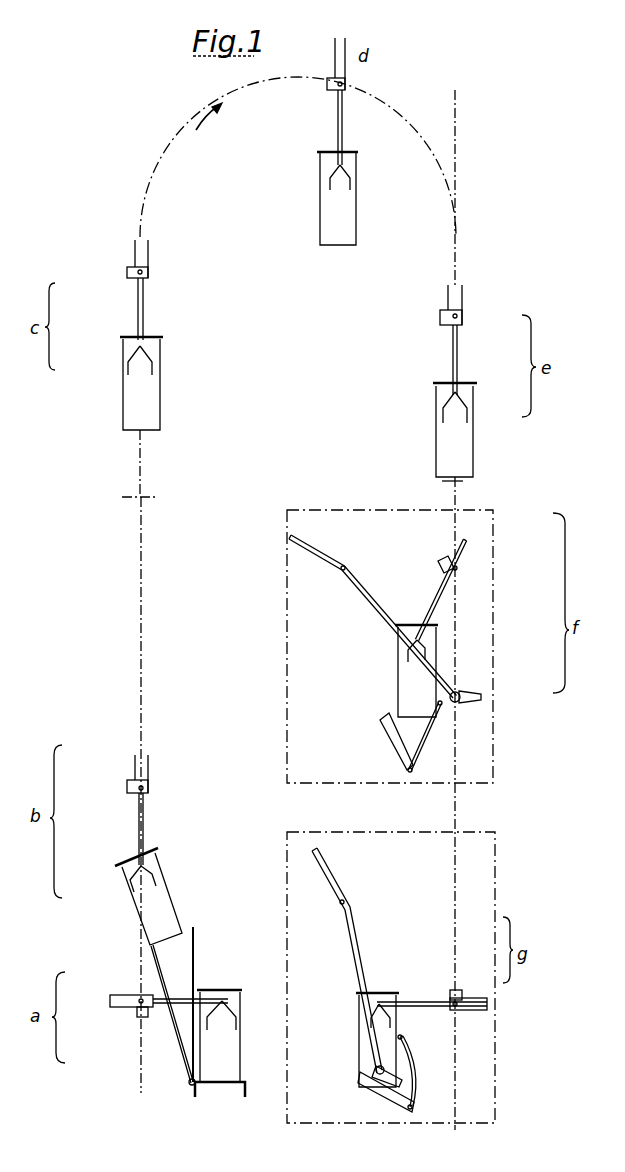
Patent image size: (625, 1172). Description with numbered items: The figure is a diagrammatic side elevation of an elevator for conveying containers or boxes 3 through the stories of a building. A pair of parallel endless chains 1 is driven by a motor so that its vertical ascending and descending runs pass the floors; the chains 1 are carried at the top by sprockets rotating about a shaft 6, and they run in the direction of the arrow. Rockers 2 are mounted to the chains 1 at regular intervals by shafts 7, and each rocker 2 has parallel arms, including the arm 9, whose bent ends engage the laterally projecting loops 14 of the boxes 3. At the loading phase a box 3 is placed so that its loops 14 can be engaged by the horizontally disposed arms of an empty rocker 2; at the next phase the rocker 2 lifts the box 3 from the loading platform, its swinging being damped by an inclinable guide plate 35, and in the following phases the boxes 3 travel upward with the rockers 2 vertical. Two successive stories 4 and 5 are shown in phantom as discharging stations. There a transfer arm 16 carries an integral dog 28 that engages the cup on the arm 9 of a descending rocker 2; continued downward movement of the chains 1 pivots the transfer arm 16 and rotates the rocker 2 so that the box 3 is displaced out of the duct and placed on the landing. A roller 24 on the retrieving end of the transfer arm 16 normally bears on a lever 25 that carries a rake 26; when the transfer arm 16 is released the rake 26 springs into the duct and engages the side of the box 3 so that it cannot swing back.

The endless chains 1 is at (438, 150).
The rocker 2 is at (470, 547).
The container 3 is at (465, 430).
The story 4 is at (500, 758).
The story 5 is at (500, 843).
The shaft 6 is at (300, 244).
The shaft 7 is at (134, 281).
The arm 9 is at (458, 342).
The loop 14 is at (132, 355).
The transfer arm 16 is at (398, 618).
The roller 24 is at (458, 691).
The lever 25 is at (380, 1090).
The rake 26 is at (420, 1069).
The dog 28 is at (393, 1000).
The inclinable guide plate 35 is at (202, 1053).